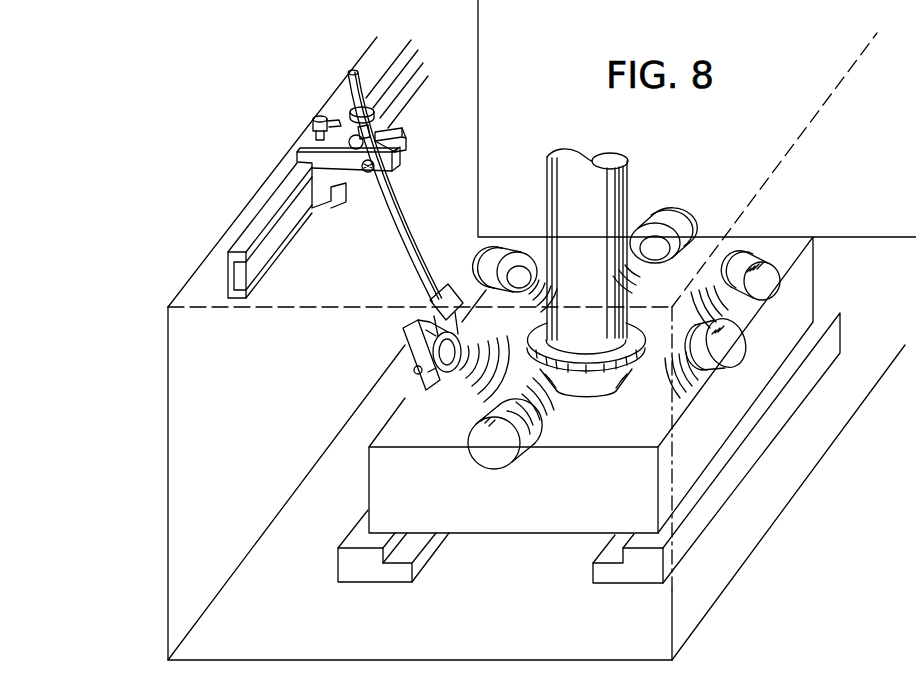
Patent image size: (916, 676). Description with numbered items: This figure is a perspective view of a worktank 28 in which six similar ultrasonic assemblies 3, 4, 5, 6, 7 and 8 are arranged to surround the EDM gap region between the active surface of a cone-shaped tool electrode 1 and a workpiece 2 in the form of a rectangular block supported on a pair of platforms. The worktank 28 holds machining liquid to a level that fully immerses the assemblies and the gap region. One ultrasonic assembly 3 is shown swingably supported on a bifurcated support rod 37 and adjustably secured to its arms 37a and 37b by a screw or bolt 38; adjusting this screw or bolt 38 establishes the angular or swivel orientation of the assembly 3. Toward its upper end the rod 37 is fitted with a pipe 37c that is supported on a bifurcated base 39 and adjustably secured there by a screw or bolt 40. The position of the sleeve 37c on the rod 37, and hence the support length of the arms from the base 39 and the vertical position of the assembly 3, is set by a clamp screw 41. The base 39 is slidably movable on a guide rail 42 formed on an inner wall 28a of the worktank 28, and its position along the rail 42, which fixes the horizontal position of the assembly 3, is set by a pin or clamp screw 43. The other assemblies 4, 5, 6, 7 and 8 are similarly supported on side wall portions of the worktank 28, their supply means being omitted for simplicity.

The tool electrode 1 is at (614, 203).
The workpiece 2 is at (552, 522).
The ultrasonic assembly 3 is at (434, 388).
The ultrasonic assembly 4 is at (494, 466).
The ultrasonic assembly 5 is at (739, 362).
The ultrasonic assembly 6 is at (774, 297).
The ultrasonic assembly 7 is at (679, 217).
The ultrasonic assembly 8 is at (500, 238).
The worktank 28 is at (168, 470).
The inner wall 28a is at (196, 292).
The bifurcated support rod 37 is at (400, 247).
The arm 37a is at (410, 330).
The arm 37b is at (458, 287).
The pipe 37c is at (384, 125).
The screw or bolt 38 is at (408, 360).
The bifurcated base 39 is at (322, 153).
The screw or bolt 40 is at (372, 172).
The clamp screw 41 is at (404, 125).
The guide rail 42 is at (248, 237).
The pin or clamp screw 43 is at (318, 123).